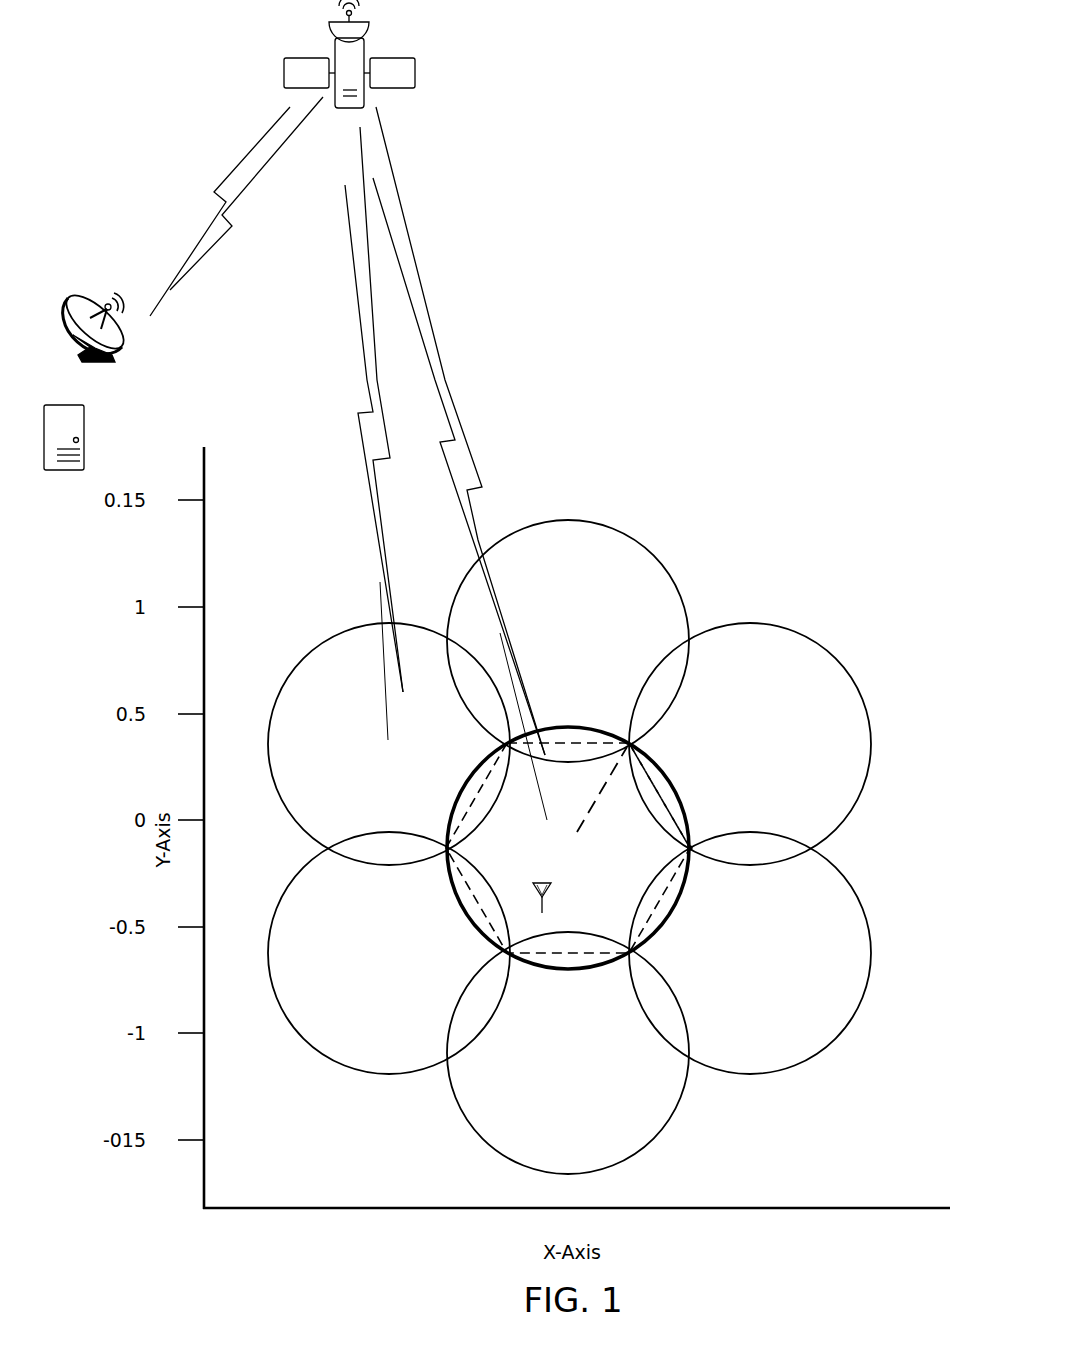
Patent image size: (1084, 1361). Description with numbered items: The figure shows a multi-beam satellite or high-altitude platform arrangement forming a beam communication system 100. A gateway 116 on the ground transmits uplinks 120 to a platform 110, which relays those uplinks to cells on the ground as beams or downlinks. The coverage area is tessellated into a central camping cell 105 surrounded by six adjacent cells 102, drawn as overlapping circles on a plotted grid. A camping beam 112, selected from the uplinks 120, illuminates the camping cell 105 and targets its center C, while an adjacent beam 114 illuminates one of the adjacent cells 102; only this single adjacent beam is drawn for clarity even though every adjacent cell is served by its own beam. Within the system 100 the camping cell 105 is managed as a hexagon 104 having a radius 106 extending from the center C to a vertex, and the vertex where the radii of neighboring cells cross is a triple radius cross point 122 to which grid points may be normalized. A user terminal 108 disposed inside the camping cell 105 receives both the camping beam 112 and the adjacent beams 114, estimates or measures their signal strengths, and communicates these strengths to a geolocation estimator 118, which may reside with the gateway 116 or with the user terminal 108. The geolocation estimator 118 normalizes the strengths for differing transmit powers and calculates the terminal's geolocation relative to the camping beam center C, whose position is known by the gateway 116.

The beam communication system 100 is at (712, 308).
The adjacent cells 102 is at (565, 516).
The hexagon 104 is at (582, 743).
The camping cell 105 is at (660, 767).
The radius 106 is at (583, 825).
The user terminal 108 is at (540, 895).
The platform 110 is at (415, 58).
The camping beam 112 is at (425, 300).
The adjacent beam 114 is at (357, 425).
The gateway 116 is at (95, 339).
The geolocation estimator 118 is at (65, 437).
The uplinks 120 is at (220, 207).
The triple radius cross point 122 is at (690, 848).